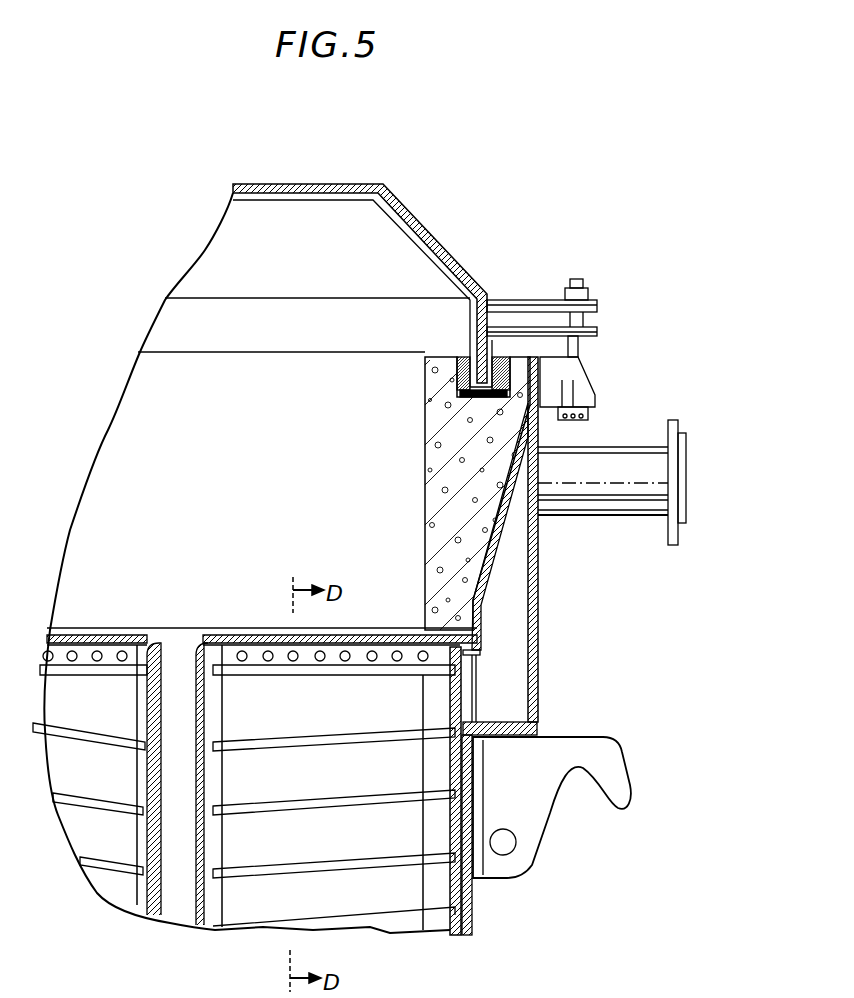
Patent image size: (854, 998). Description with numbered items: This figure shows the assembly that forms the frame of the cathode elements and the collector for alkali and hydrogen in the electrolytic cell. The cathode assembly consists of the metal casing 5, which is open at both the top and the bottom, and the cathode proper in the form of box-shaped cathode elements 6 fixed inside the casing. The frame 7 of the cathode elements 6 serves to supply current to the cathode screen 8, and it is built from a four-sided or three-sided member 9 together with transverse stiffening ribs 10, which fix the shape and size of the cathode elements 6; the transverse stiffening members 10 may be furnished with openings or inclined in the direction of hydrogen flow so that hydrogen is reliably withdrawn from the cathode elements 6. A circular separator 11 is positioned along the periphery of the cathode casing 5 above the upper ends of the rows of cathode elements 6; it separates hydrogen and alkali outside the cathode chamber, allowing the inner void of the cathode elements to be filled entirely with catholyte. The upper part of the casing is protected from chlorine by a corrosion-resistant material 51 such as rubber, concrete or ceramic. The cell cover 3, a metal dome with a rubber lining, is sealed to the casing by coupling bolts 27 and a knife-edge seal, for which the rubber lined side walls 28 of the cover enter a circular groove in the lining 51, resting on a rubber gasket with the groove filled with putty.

The cell cover 3 is at (447, 252).
The metal casing 5 is at (472, 915).
The cathode elements 6 is at (237, 783).
The frame of cathode elements 7 is at (260, 929).
The cathode screen 8 is at (193, 883).
The four-sided or three-sided member 9 is at (256, 657).
The transverse stiffening ribs 10 is at (378, 798).
The circular separator 11 is at (515, 590).
The coupling bolts 27 is at (595, 396).
The rubber lined side walls of the cover 28 is at (497, 387).
The corrosion-resistant material 51 is at (492, 510).